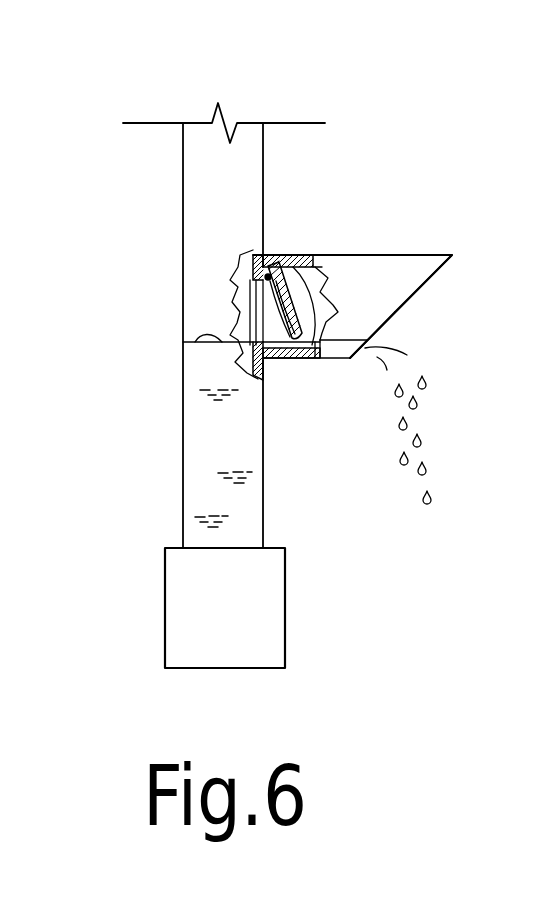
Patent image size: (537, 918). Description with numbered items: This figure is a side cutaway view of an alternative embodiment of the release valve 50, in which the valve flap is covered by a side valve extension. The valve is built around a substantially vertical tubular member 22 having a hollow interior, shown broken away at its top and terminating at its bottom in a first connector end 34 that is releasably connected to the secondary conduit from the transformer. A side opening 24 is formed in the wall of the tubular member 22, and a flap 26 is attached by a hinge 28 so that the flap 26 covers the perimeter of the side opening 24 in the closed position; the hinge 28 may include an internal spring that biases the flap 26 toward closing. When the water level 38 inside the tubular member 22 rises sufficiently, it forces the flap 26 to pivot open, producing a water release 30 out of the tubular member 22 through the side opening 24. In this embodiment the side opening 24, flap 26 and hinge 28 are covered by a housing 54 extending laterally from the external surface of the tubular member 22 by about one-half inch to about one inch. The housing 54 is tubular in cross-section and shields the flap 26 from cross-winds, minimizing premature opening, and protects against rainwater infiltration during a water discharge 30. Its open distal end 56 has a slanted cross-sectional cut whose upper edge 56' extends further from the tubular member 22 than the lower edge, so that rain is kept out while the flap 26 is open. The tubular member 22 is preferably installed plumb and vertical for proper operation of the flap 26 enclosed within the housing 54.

The tubular member 22 is at (183, 200).
The valve opening 24 is at (248, 318).
The flap 26 is at (313, 360).
The hinge 28 is at (268, 257).
The water release 30 is at (417, 403).
The first connector end 34 is at (193, 668).
The water level 38 is at (187, 343).
The release valve 50 is at (405, 121).
The housing 54 is at (380, 255).
The open distal end 56 is at (446, 294).
The upper edge 56' is at (476, 228).